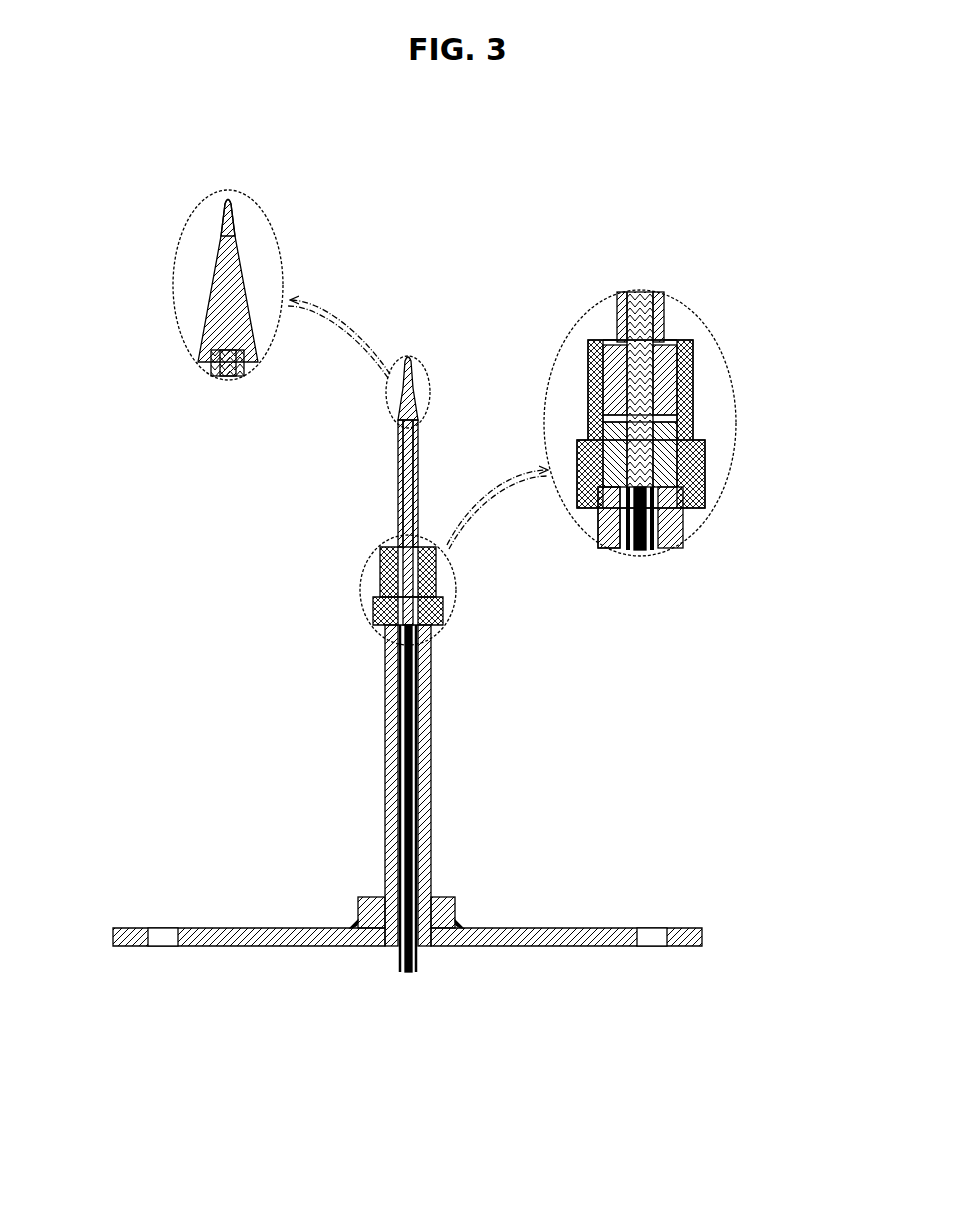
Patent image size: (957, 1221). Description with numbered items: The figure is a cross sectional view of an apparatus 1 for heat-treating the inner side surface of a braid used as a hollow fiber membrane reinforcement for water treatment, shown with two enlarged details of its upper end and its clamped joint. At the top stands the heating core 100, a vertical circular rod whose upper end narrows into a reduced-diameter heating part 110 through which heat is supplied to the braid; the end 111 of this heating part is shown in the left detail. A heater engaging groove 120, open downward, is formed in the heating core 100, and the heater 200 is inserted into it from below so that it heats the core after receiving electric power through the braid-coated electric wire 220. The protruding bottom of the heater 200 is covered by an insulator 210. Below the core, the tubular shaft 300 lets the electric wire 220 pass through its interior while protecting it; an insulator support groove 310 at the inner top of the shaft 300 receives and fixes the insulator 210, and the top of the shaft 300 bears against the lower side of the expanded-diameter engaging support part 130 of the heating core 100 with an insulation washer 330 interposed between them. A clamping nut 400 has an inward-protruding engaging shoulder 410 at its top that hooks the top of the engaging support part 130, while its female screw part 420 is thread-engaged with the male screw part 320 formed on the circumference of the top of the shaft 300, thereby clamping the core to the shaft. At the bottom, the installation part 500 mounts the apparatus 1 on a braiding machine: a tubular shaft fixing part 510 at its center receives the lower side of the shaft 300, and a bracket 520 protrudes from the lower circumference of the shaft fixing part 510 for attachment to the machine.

The apparatus for heat-treating an inner side surface of a braid 1 is at (70, 139).
The heating core 100 is at (398, 482).
The heating part 110 is at (412, 358).
The tip end 111 is at (225, 230).
The heater engaging groove 120 is at (400, 462).
The engaging support part 130 is at (693, 380).
The heater 200 is at (398, 508).
The insulator 210 is at (595, 505).
The electric wire 220 is at (400, 760).
The shaft 300 is at (430, 718).
The insulator support groove 310 is at (700, 500).
The male screw part 320 is at (705, 455).
The insulation washer 330 is at (693, 413).
The clamping nut 400 is at (385, 578).
The engaging shoulder 410 is at (693, 355).
The female screw part 420 is at (641, 474).
The installation part 500 is at (305, 978).
The shaft fixing part 510 is at (360, 897).
The bracket 520 is at (535, 928).